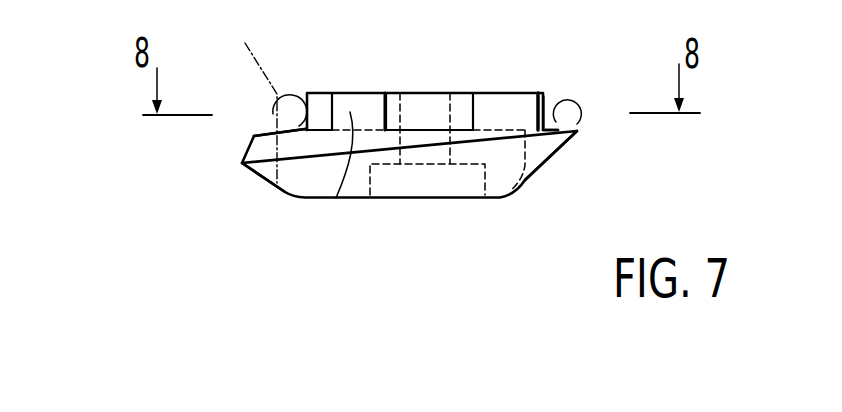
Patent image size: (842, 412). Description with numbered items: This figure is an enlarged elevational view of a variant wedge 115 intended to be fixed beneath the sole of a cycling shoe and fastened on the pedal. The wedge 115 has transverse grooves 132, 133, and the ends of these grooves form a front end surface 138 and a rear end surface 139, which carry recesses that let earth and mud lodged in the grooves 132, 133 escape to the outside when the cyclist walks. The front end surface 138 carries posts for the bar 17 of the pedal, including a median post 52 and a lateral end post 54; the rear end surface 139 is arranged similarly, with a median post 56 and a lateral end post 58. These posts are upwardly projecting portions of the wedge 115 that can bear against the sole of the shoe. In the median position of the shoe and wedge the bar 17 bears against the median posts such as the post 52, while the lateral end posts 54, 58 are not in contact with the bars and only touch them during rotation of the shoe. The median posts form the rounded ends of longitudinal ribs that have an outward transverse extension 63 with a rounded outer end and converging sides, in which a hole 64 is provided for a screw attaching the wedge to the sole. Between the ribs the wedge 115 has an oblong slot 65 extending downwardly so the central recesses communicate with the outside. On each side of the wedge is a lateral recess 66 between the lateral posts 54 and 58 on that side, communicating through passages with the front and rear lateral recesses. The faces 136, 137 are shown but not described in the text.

The bar 17 is at (247, 102).
The median post 52 is at (318, 102).
The lateral end post 54 is at (336, 198).
The median post 56 is at (548, 100).
The lateral end post 58 is at (497, 105).
The outward transverse extension 63 is at (430, 105).
The hole 64 is at (428, 157).
The oblong slot 65 is at (515, 193).
The lateral recess 66 is at (393, 100).
The wedge 115 is at (276, 218).
The transverse groove 132 is at (290, 130).
The transverse groove 133 is at (577, 116).
The left inclined face 136 is at (268, 182).
The right inclined face 137 is at (543, 172).
The front end surface 138 is at (300, 98).
The rear end surface 139 is at (553, 103).